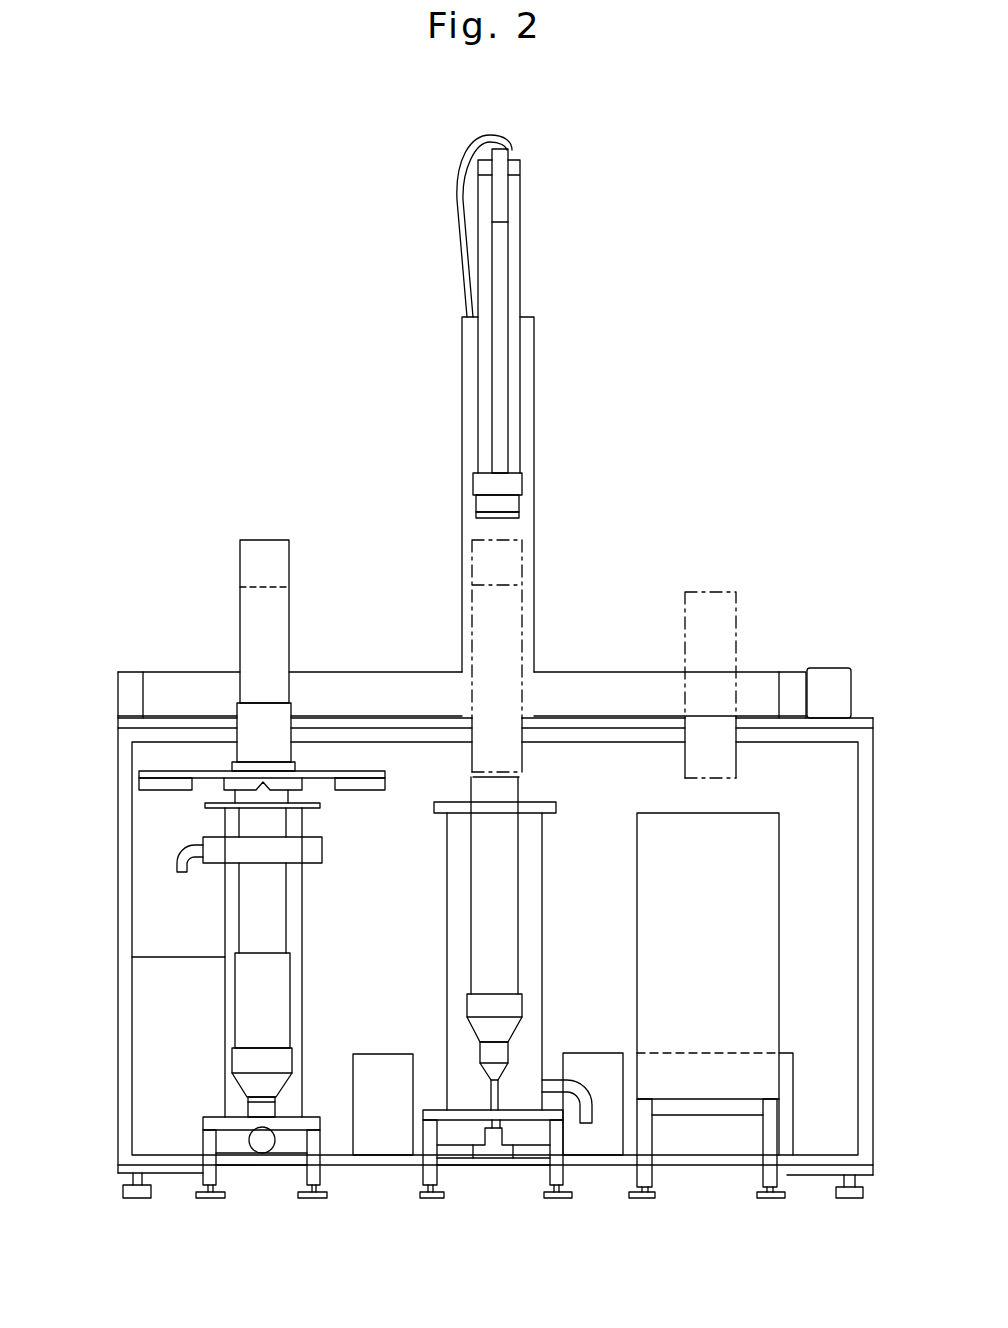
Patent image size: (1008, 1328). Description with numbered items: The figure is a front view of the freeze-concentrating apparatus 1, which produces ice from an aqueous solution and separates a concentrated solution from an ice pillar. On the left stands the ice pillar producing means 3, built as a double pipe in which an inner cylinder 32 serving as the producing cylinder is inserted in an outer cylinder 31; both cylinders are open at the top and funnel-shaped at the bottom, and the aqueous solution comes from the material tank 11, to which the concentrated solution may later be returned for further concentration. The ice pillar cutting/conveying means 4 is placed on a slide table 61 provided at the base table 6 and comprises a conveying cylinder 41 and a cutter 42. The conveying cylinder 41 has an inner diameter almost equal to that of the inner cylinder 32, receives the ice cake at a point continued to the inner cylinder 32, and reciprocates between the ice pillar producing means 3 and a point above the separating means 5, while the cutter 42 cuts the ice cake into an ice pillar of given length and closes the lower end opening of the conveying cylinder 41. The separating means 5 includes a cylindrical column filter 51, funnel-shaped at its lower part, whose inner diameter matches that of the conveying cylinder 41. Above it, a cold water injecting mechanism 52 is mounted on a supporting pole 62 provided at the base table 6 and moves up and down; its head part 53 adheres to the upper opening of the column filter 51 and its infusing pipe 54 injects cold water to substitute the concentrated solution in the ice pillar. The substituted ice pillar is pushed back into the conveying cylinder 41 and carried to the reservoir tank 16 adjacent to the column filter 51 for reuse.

The freeze-concentrating apparatus 1 is at (132, 313).
The ice pillar producing means 3 is at (313, 940).
The ice pillar cutting/conveying means 4 is at (232, 622).
The separating means 5 is at (553, 880).
The base table 6 is at (876, 837).
The material tank 11 is at (170, 957).
The reservoir tank 16 is at (778, 870).
The outer cylinder 31 is at (265, 985).
The inner cylinder 32 is at (238, 913).
The conveying cylinder 41 is at (290, 621).
The cutter 42 is at (178, 765).
The column filter 51 is at (520, 940).
The cold water injecting mechanism 52 is at (532, 182).
The head part 53 is at (522, 503).
The infusing pipe 54 is at (498, 240).
The slide table 61 is at (620, 718).
The supporting pole 62 is at (535, 360).